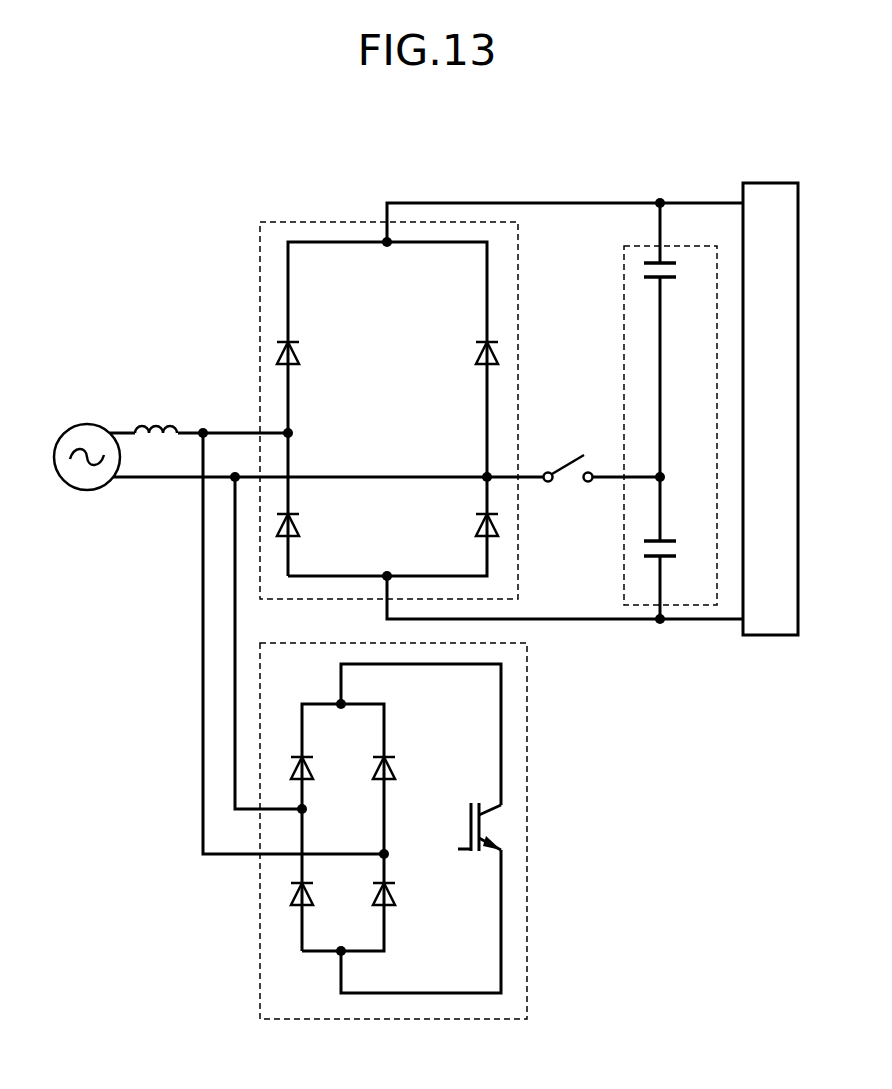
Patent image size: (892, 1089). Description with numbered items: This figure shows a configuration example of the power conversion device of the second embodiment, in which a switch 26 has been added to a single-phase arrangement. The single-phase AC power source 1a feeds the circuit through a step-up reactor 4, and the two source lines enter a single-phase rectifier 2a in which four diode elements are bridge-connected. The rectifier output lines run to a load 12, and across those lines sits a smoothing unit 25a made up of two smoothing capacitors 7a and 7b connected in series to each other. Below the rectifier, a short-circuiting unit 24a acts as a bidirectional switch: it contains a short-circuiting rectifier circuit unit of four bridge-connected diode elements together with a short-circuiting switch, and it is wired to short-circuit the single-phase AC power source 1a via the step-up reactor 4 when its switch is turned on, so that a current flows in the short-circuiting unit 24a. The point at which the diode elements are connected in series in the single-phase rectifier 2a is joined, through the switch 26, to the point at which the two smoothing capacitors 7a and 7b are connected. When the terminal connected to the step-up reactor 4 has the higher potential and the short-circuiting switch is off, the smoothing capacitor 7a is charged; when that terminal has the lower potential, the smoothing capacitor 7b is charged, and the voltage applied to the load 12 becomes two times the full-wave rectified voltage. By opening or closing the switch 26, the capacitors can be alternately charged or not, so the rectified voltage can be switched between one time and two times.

The single-phase AC power source 1a is at (88, 422).
The step-up reactor 4 is at (155, 421).
The single-phase rectifier 2a is at (306, 222).
The switch 26 is at (564, 462).
The smoothing unit 25a is at (624, 293).
The smoothing capacitor 7a is at (668, 280).
The smoothing capacitor 7b is at (668, 559).
The load 12 is at (771, 183).
The short-circuiting unit 24a is at (527, 818).